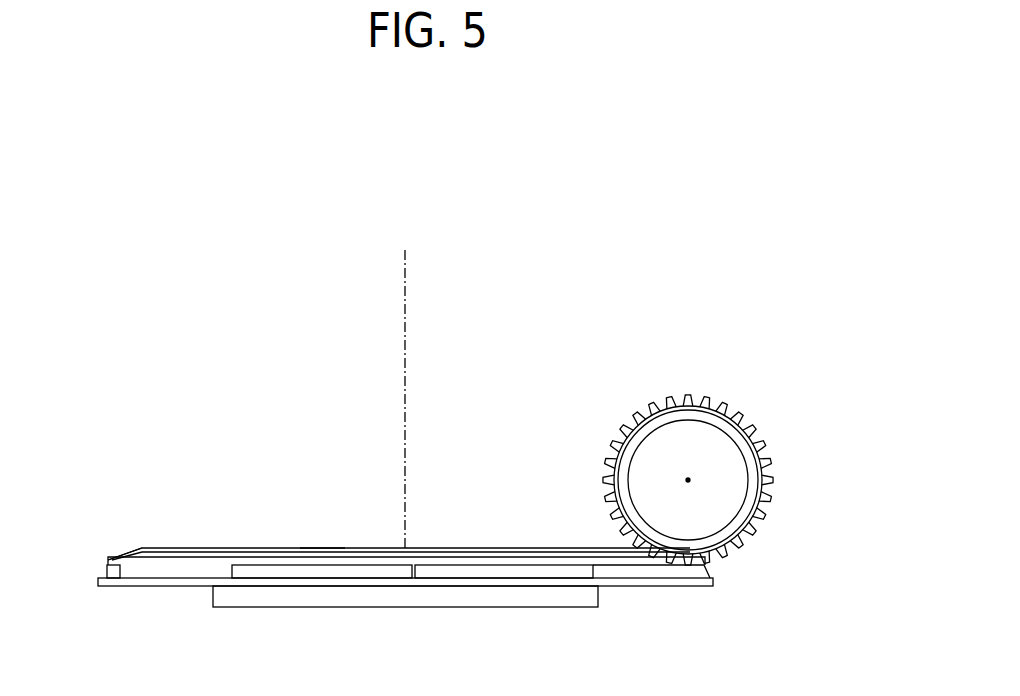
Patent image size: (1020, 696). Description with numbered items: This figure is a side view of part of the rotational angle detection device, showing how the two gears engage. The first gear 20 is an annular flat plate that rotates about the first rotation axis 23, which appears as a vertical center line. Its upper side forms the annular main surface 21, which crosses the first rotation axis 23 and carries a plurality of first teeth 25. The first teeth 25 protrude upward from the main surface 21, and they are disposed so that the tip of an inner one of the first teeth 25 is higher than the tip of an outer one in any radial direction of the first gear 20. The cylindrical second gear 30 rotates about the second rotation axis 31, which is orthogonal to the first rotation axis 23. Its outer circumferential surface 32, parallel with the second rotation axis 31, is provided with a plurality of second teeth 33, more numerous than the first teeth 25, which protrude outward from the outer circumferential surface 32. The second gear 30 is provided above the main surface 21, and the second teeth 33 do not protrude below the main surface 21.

The first gear 20 is at (213, 518).
The main surface 21 is at (137, 556).
The first rotation axis 23 is at (405, 281).
The first teeth 25 is at (333, 550).
The second gear 30 is at (724, 368).
The second rotation axis 31 is at (690, 480).
The outer circumferential surface 32 is at (757, 436).
The second teeth 33 is at (617, 437).